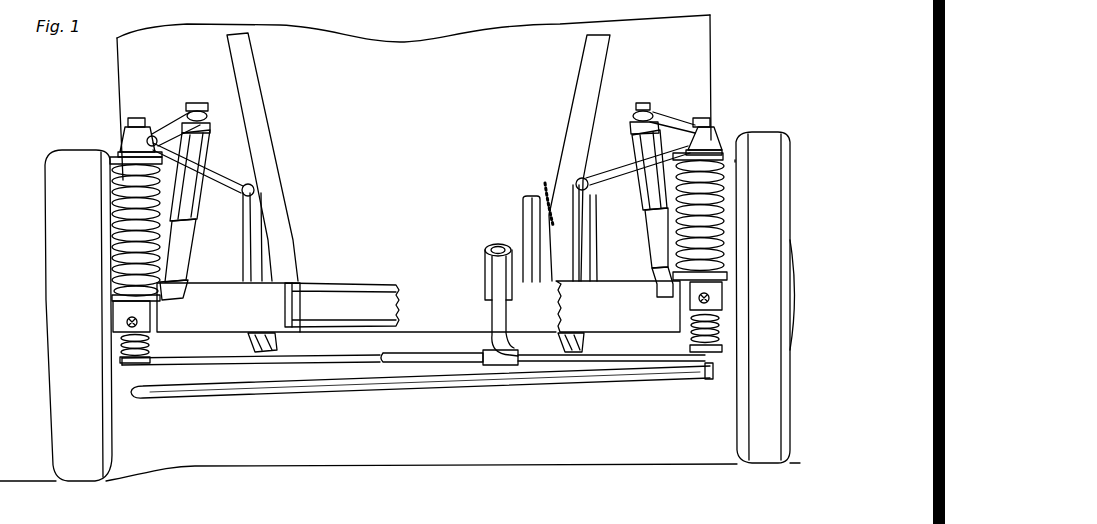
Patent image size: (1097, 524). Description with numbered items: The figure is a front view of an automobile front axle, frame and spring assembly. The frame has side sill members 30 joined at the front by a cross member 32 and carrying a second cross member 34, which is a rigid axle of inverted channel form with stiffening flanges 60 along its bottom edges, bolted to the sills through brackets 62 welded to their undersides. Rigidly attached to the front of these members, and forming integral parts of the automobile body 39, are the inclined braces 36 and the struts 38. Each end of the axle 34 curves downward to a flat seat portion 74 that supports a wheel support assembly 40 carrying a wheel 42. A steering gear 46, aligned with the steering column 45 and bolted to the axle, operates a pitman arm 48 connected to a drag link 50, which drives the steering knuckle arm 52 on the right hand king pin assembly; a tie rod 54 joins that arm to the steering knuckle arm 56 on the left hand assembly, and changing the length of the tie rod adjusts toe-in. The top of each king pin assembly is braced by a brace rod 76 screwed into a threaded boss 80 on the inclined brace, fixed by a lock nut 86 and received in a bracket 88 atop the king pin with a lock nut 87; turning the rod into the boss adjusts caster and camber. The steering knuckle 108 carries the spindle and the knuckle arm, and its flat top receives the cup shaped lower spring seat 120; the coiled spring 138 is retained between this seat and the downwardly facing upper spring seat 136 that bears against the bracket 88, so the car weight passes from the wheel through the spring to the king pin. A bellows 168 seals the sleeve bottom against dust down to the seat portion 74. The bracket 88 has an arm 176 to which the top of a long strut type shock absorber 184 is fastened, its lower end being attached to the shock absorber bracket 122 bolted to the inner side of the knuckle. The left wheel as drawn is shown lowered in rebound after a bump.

The side sill members 30 is at (232, 304).
The cross member 32 is at (354, 297).
The cross member 34 is at (287, 353).
The inclined braces 36 is at (258, 101).
The struts 38 is at (112, 166).
The automobile body 39 is at (297, 46).
The wheel support assembly 40 is at (736, 116).
The wheels 42 is at (770, 231).
The steering column 45 is at (528, 223).
The steering gear 46 is at (485, 270).
The pitman arm 48 is at (500, 312).
The drag link 50 is at (462, 358).
The steering knuckle arm 52 is at (127, 322).
The tie rod 54 is at (498, 378).
The steering knuckle arm 56 is at (701, 300).
The stiffening flanges 60 is at (214, 366).
The brackets 62 is at (250, 341).
The seat portion 74 is at (140, 355).
The brace rod 76 is at (613, 171).
The threaded boss 80 is at (249, 194).
The lock nuts 86 is at (241, 180).
The lock nuts 87 is at (711, 141).
The bracket 88 is at (692, 130).
The steering knuckle 108 is at (118, 325).
The spring seat 120 is at (718, 278).
The shock absorber bracket 122 is at (653, 288).
The spring seat 136 is at (723, 160).
The coiled spring 138 is at (720, 187).
The bellows 168 is at (712, 340).
The arm 176 is at (657, 117).
The shock absorber 184 is at (640, 212).